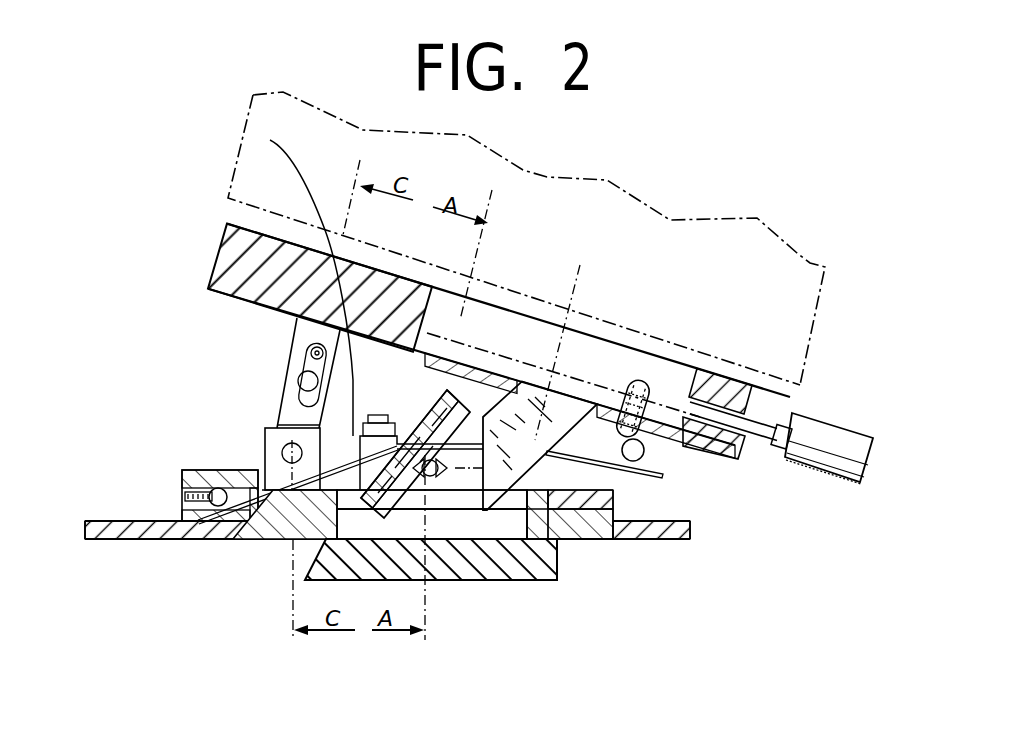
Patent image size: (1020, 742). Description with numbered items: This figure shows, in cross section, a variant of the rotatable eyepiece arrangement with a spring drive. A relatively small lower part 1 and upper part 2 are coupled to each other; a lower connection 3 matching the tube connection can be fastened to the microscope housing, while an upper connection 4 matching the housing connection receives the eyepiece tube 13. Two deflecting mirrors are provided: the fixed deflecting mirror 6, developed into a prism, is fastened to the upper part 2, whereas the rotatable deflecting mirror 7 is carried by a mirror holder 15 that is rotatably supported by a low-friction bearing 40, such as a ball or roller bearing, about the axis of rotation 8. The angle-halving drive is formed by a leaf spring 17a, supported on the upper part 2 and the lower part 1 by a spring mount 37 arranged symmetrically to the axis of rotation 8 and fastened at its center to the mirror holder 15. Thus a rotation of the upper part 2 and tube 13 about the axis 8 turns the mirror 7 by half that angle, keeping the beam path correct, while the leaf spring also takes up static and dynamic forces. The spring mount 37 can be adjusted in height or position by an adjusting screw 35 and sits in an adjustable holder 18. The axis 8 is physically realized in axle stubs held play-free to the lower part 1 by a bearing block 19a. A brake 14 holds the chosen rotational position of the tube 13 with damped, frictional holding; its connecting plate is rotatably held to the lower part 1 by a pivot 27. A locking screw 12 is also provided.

The lower part 1 is at (687, 539).
The upper part 2 is at (222, 253).
The connection for microscope housing 3 is at (552, 545).
The connection for tube 4 is at (523, 330).
The deflecting mirror, fixed 6 is at (545, 539).
The deflecting mirror, rotatable 7 is at (431, 478).
The axis of rotation 8 is at (454, 490).
The locking screw 12 is at (840, 420).
The tube 13 is at (818, 303).
The brake 14 is at (306, 372).
The mirror holder 15 is at (313, 540).
The leaf spring 17a is at (297, 412).
The adjustable holder for spring mount 18 is at (640, 463).
The bearing block 19a is at (270, 140).
The pivot point 27 is at (265, 438).
The adjusting screw 35 is at (642, 380).
The spring mount 37 is at (665, 476).
The low-friction bearing 40 is at (478, 520).